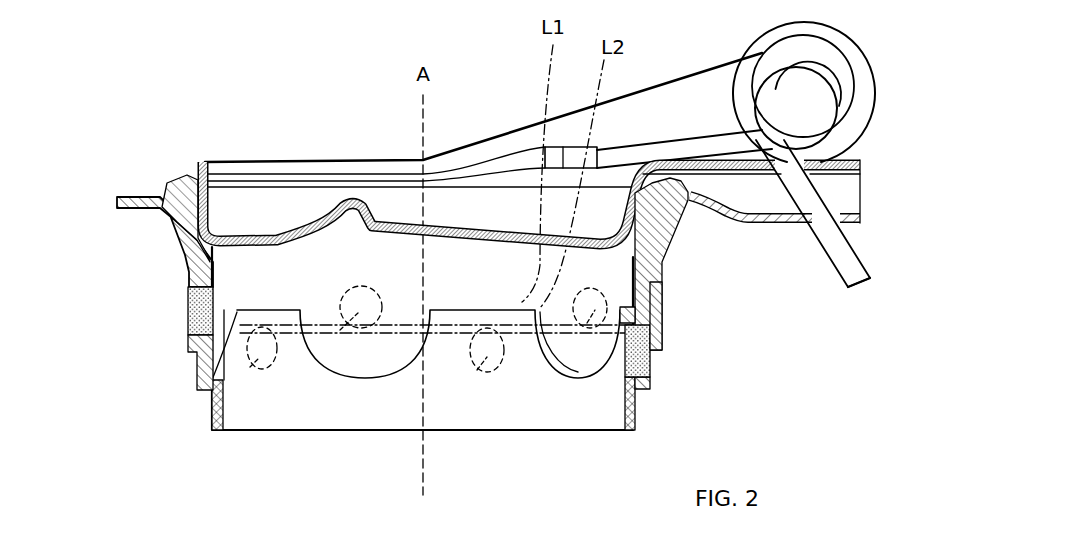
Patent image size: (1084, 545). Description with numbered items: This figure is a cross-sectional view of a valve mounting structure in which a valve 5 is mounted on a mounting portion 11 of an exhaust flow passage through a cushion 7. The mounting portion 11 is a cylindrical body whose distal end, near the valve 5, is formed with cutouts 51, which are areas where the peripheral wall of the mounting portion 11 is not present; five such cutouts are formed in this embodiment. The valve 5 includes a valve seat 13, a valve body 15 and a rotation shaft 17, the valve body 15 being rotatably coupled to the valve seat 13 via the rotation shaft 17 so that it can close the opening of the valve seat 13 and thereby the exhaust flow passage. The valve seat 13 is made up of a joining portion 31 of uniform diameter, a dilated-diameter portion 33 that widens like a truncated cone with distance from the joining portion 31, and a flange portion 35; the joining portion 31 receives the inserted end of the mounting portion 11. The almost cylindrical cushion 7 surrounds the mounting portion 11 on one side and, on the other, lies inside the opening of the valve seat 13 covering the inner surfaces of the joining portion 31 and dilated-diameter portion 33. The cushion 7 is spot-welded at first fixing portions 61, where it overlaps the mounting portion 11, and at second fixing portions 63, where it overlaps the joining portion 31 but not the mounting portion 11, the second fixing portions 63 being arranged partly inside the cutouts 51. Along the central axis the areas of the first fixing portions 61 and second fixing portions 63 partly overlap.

The valve 5 is at (293, 133).
The cushion 7 is at (183, 193).
The mounting portion 11 is at (633, 407).
The valve seat 13 is at (158, 229).
The valve body 15 is at (317, 168).
The rotation shaft 17 is at (808, 92).
The joining portion 31 is at (187, 342).
The dilated-diameter portion 33 is at (680, 235).
The flange portion 35 is at (780, 225).
The cutouts 51 is at (380, 360).
The first fixing portions 61 is at (255, 368).
The second fixing portions 63 is at (200, 315).